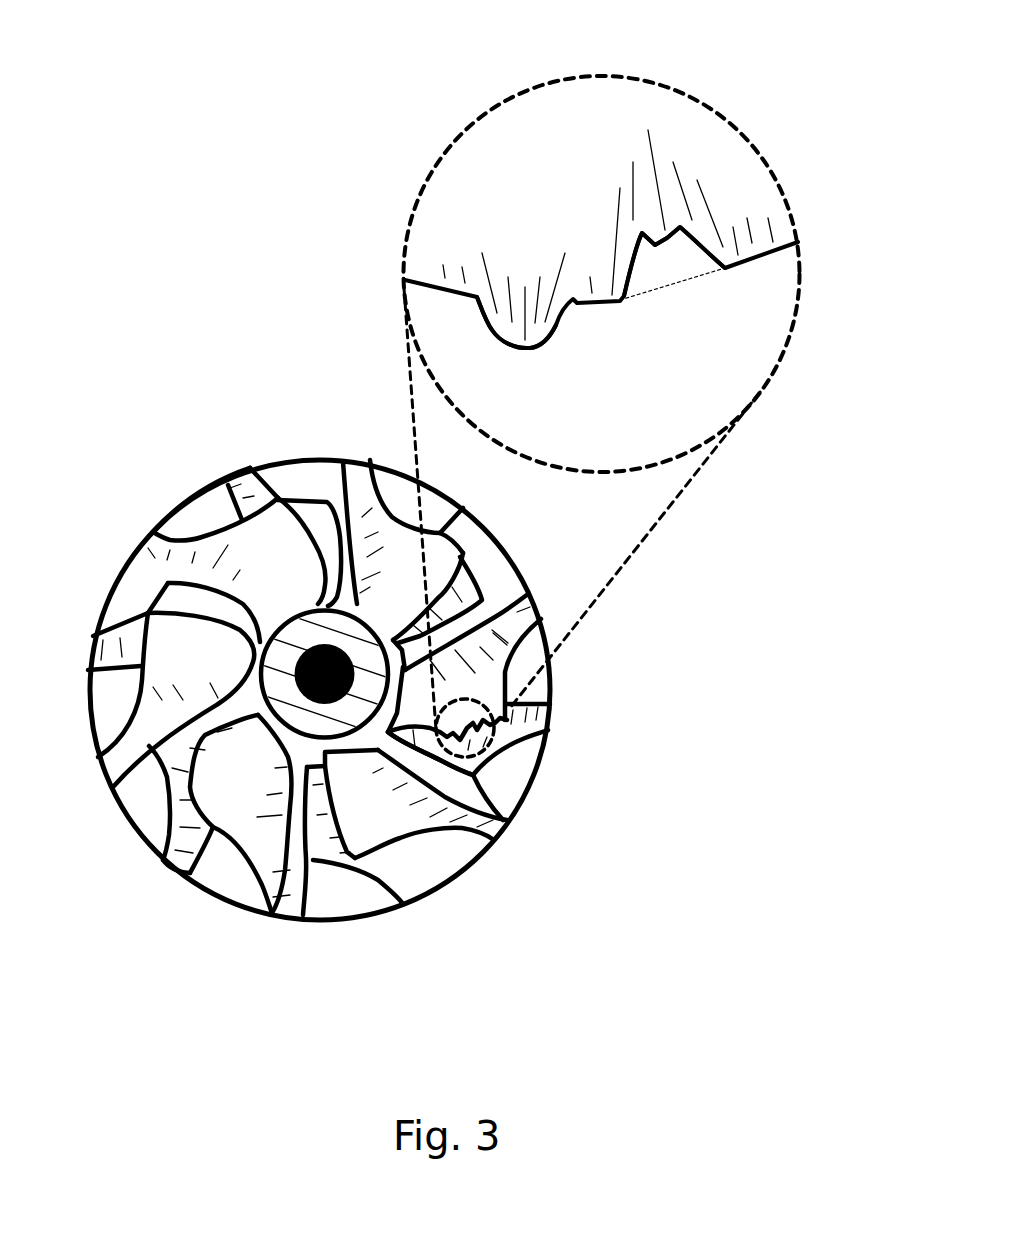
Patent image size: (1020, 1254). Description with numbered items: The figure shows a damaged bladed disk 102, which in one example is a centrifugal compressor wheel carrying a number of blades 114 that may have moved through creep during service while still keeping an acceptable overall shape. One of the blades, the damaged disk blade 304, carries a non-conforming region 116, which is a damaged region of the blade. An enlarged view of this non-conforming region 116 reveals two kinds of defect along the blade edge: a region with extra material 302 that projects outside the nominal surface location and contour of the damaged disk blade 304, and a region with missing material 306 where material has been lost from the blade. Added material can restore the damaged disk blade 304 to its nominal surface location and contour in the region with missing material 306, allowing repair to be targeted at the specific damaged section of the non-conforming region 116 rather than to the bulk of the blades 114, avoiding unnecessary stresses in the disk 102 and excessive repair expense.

The damaged bladed disk 102 is at (124, 73).
The blades 114 is at (214, 518).
The non-conforming region 116 is at (612, 75).
The region with extra material 302 is at (478, 338).
The damaged disk blade 304 is at (427, 746).
The region with missing material 306 is at (680, 272).